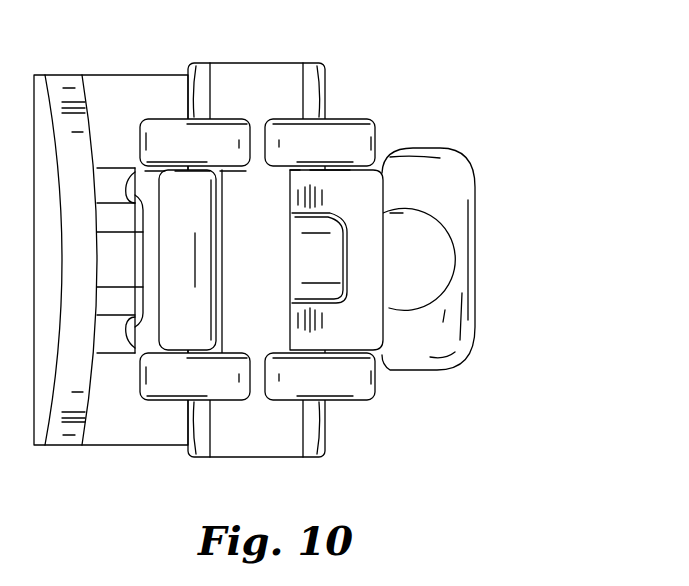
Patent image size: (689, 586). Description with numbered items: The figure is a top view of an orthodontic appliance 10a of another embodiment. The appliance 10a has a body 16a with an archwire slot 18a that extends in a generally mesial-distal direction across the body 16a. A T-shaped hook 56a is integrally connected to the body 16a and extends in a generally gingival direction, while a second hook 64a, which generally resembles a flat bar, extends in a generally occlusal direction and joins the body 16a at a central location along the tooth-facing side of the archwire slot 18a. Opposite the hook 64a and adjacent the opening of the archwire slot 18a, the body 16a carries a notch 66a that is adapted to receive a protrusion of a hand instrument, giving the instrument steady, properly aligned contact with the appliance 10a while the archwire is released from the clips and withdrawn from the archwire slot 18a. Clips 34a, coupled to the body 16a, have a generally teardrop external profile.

The orthodontic appliance 10a is at (317, 259).
The body 16a is at (374, 260).
The archwire slot 18a is at (220, 306).
The clip 34a is at (363, 120).
The T-shaped hook 56a is at (452, 191).
The hook 64a is at (182, 190).
The notch 66a is at (323, 260).